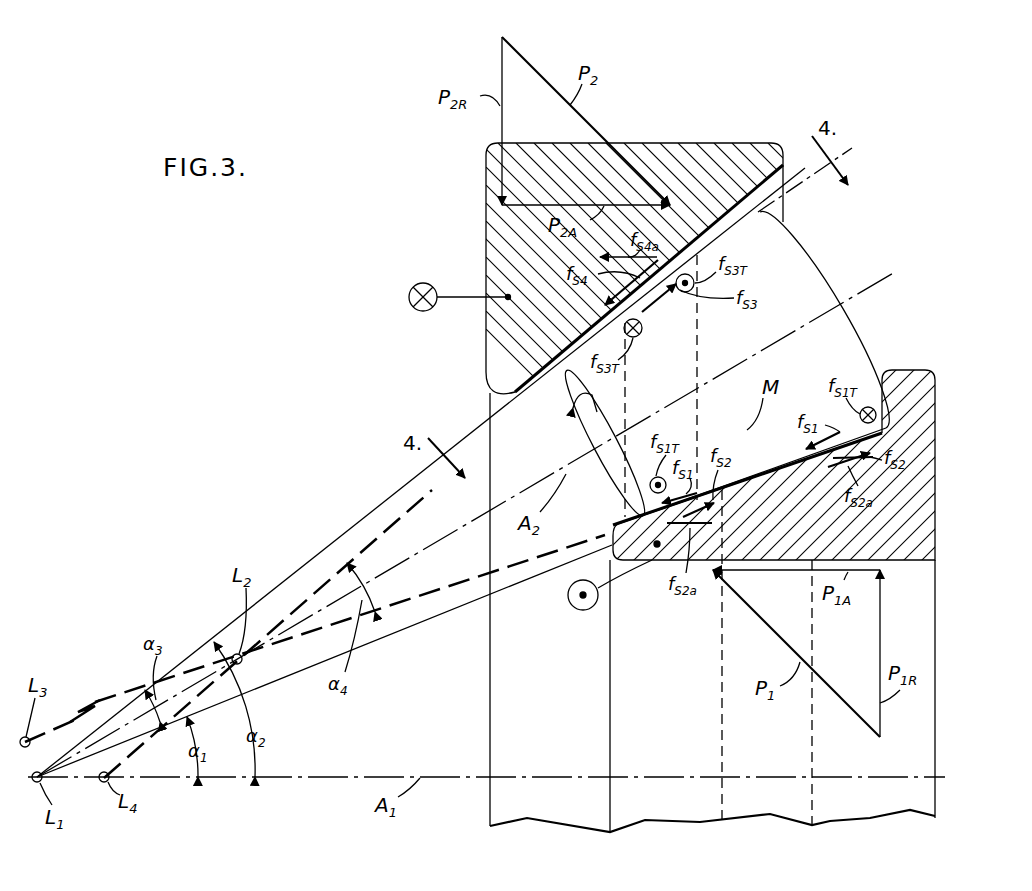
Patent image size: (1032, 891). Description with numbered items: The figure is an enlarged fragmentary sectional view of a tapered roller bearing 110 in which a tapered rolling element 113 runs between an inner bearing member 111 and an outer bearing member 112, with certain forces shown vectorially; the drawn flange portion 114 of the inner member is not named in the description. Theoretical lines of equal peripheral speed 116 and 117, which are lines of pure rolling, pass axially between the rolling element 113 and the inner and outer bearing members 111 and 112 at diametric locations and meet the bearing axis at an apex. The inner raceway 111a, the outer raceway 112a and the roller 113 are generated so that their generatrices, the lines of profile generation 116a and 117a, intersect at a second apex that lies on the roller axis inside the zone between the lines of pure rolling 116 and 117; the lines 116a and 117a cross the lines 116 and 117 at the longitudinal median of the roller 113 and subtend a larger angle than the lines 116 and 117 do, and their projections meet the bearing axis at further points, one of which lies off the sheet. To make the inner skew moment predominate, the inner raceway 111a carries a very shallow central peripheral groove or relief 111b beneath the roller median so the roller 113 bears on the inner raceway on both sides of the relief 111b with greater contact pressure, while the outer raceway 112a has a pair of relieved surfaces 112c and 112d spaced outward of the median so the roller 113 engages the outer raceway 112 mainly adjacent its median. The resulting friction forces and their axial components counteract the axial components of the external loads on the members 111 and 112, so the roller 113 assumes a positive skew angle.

The tapered roller bearing 110 is at (716, 140).
The inner bearing member 111 is at (928, 556).
The inner raceway 111a is at (740, 582).
The central peripheral groove or relief 111b is at (753, 542).
The outer bearing member 112 is at (664, 142).
The outer raceway 112a is at (645, 312).
The relieved surface 112c is at (783, 160).
The relieved surface 112d is at (500, 390).
The tapered rolling element 113 is at (722, 366).
The cone thrust rib (flange) 114 is at (898, 372).
The theoretical line of equal peripheral speed 116 is at (362, 647).
The line of profile generation 116a is at (402, 600).
The theoretical line of equal peripheral speed 117 is at (310, 560).
The line of profile generation 117a is at (407, 516).